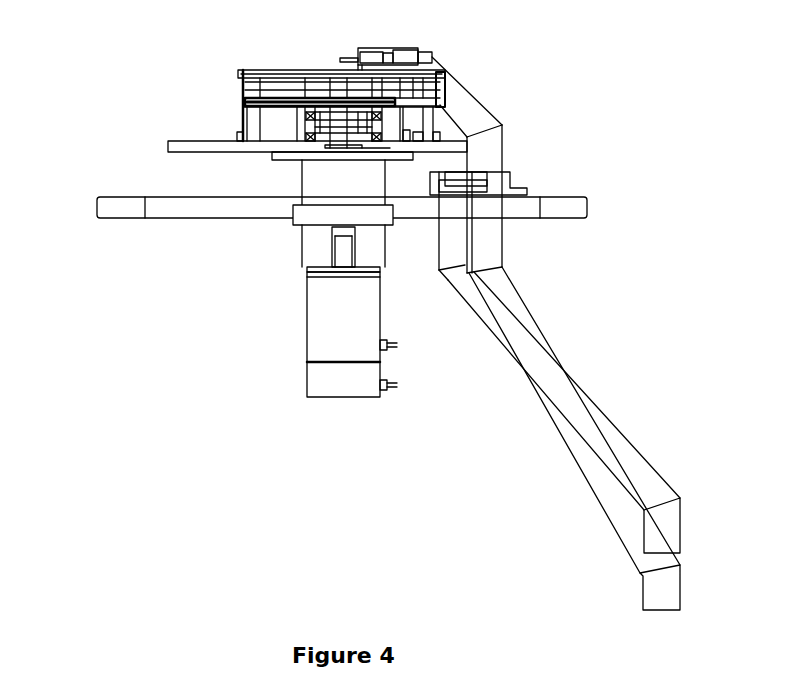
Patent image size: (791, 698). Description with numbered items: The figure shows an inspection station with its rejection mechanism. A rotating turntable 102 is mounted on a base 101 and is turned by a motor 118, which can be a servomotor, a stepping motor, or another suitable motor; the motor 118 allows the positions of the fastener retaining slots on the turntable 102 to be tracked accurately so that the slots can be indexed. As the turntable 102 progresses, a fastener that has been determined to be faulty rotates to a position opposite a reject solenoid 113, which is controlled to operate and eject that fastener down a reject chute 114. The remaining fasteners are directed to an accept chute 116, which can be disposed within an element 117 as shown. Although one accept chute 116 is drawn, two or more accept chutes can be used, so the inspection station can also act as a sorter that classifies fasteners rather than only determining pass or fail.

The base 101 is at (168, 141).
The rotating turntable 102 is at (237, 70).
The reject solenoid 113 is at (397, 50).
The reject chute 114 is at (498, 228).
The accept chute 116 is at (448, 282).
The element 117 is at (115, 205).
The motor 118 is at (323, 312).